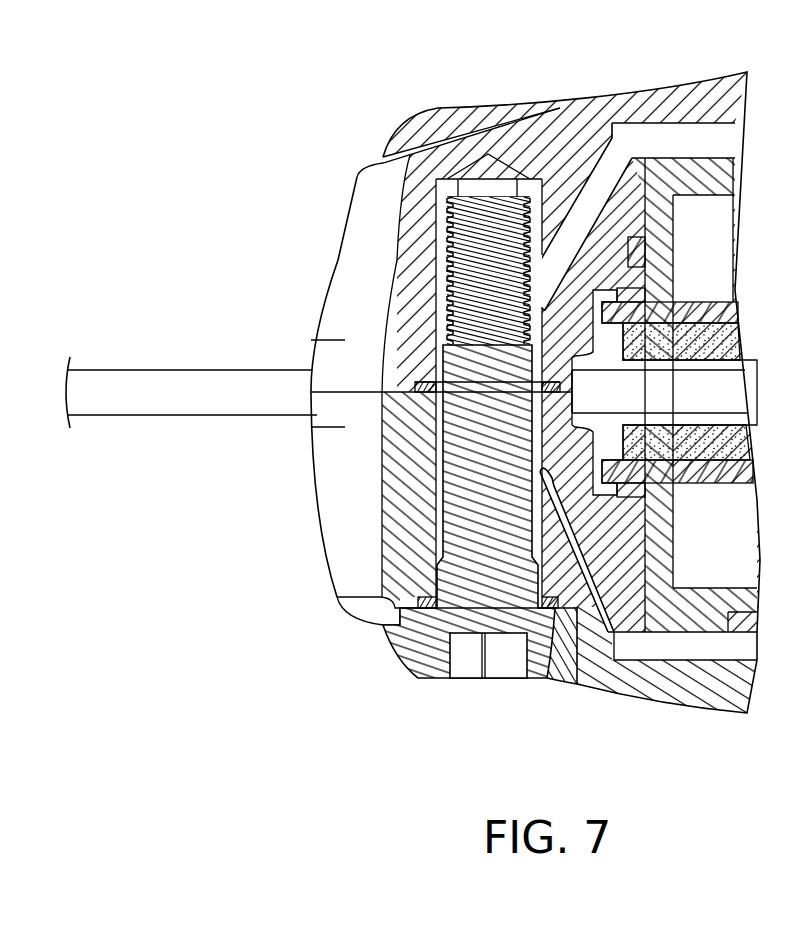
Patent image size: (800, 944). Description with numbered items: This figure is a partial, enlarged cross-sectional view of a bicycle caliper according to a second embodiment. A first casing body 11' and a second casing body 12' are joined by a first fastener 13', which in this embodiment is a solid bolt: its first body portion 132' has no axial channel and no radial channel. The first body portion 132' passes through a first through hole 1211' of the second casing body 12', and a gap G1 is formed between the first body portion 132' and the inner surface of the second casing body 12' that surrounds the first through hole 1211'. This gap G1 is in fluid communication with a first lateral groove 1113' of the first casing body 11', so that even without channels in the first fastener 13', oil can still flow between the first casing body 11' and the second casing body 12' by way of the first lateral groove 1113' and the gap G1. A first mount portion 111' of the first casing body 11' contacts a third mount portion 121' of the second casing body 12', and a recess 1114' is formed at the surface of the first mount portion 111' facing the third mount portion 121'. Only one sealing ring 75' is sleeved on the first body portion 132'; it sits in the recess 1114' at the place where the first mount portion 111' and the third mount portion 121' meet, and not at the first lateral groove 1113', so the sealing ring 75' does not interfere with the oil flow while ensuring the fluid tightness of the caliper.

The first casing body 11' is at (317, 291).
The first mount portion 111' is at (464, 109).
The first lateral groove 1113' is at (489, 139).
The recess 1114' is at (392, 364).
The sealing ring 75' is at (239, 364).
The second casing body 12' is at (314, 508).
The third mount portion 121' is at (345, 500).
The first through hole 1211' is at (390, 388).
The first body portion 132' is at (412, 437).
The first fastener 13' is at (488, 700).
The gap G1 is at (536, 542).